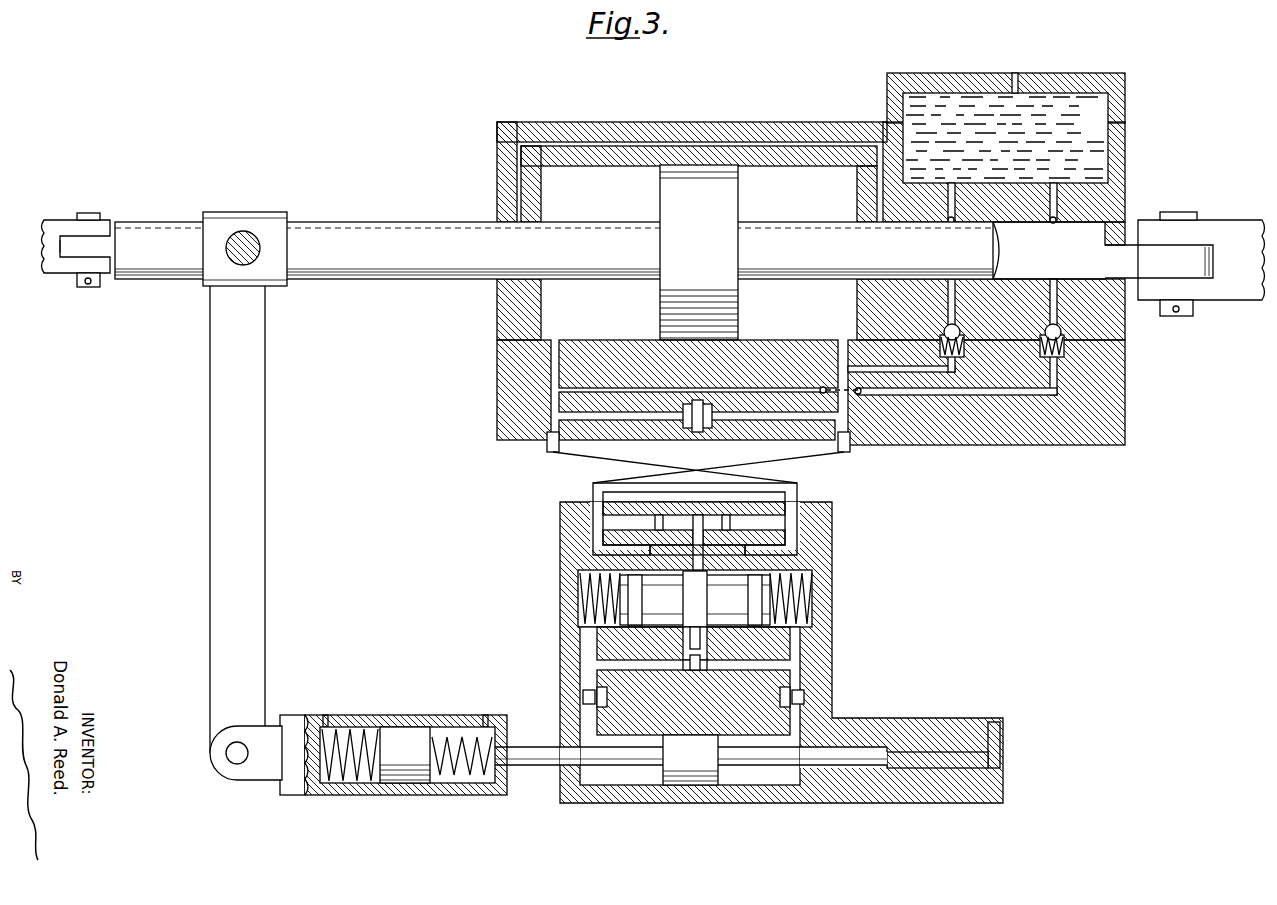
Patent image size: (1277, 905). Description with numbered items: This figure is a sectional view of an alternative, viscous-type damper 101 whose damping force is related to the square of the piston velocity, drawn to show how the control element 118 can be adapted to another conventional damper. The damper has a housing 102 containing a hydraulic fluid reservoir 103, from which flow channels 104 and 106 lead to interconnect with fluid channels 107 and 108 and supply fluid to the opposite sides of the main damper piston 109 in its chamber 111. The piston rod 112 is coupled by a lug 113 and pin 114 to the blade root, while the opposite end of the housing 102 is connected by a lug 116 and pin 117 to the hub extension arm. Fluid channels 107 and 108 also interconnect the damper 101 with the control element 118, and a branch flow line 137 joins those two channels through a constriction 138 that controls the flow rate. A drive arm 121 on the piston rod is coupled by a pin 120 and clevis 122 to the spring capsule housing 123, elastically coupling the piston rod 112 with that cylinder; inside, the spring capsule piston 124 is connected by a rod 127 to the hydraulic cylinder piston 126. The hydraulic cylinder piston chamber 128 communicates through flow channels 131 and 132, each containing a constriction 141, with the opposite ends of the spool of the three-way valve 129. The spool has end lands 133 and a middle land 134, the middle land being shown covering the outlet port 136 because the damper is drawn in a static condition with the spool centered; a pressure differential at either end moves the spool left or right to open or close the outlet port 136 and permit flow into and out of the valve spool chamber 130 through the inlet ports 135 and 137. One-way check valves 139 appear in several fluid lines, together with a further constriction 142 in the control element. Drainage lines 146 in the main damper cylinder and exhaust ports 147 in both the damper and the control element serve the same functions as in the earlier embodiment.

The damper 101 is at (700, 118).
The housing 102 is at (800, 132).
The hydraulic fluid reservoir 103 is at (1030, 143).
The flow channel 104 is at (1013, 396).
The flow channel 106 is at (893, 372).
The fluid channel 107 is at (547, 450).
The fluid channel 108 is at (850, 452).
The main damper piston 109 is at (738, 203).
The chamber 111 is at (622, 212).
The piston rod 112 is at (405, 266).
The lug 113 is at (50, 224).
The pin 114 is at (91, 213).
The lug 116 is at (1234, 226).
The pin 117 is at (1176, 212).
The control element 118 is at (742, 806).
The pin 120 is at (226, 753).
The drive arm 121 is at (210, 479).
The clevis 122 is at (258, 781).
The spring capsule housing 123 is at (363, 796).
The spring capsule piston 124 is at (405, 727).
The hydraulic cylinder piston 126 is at (693, 786).
The rod 127 is at (537, 760).
The hydraulic cylinder piston chamber 128 is at (622, 786).
The three-way valve 129 is at (722, 628).
The valve spool chamber 130 is at (752, 628).
The flow channel 131 is at (810, 656).
The flow channel 132 is at (578, 656).
The end lands 133 is at (580, 590).
The middle land 134 is at (690, 612).
The inlet port 135 is at (652, 565).
The outlet port 136 is at (690, 640).
The branch flow line 137 is at (621, 413).
The constriction 138 is at (702, 430).
The one-way check valve 139 is at (1040, 340).
The constriction 141 is at (690, 672).
The constriction 142 is at (748, 672).
The drainage line 146 is at (600, 147).
The exhaust port 147 is at (1016, 73).